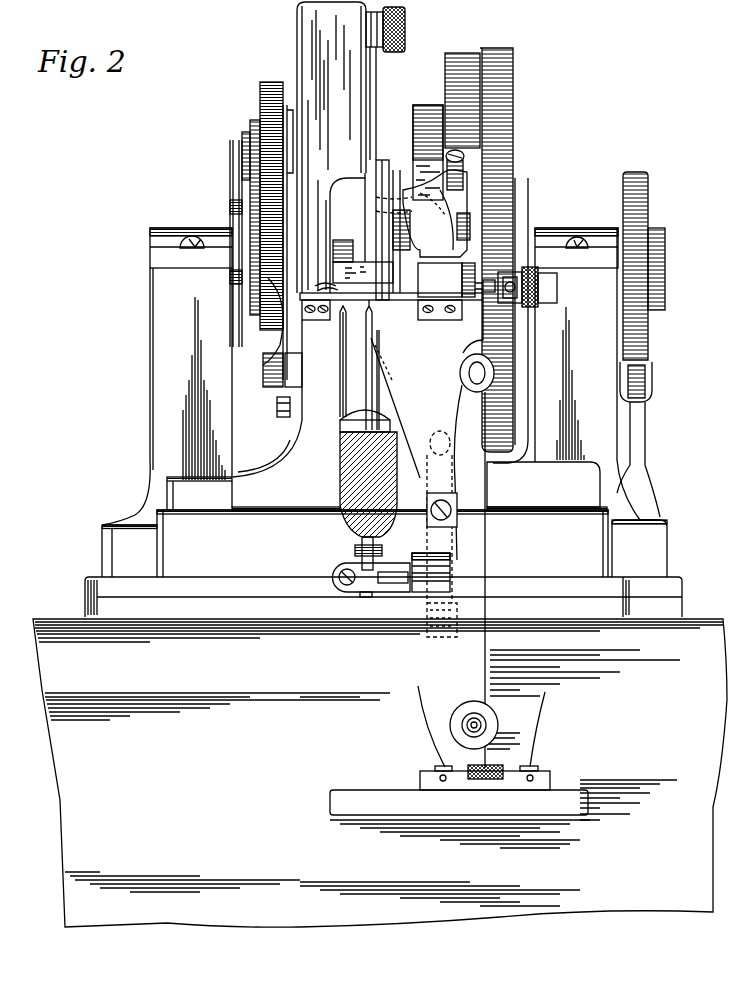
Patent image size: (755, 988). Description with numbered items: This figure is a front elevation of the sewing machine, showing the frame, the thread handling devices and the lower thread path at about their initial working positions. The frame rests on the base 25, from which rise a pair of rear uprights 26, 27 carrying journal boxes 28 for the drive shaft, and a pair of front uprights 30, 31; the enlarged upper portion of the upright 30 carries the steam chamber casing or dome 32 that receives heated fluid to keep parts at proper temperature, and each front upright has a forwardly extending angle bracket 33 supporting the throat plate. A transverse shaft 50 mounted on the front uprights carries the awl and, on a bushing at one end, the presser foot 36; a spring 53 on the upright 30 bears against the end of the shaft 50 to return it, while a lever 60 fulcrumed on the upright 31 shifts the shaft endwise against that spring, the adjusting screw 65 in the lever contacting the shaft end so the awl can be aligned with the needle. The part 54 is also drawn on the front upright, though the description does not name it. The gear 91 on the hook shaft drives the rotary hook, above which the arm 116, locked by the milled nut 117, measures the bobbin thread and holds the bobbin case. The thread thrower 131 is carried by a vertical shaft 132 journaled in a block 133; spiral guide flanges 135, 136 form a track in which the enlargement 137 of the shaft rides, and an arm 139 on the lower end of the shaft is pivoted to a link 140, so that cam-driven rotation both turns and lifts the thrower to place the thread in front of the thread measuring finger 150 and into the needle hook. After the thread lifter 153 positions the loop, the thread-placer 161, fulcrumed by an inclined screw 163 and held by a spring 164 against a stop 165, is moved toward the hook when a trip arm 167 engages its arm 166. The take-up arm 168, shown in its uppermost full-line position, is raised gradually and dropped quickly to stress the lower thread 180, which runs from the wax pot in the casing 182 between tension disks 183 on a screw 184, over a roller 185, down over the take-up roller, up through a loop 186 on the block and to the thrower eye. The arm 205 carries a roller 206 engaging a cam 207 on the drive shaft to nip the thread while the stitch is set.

The base 25 is at (86, 586).
The upright 26 is at (172, 368).
The upright 27 is at (645, 403).
The journal boxes 28 is at (150, 243).
The upright 30 is at (300, 440).
The upright 31 is at (495, 462).
The steam chamber casing or dome 32 is at (312, 42).
The angle bracket 33 is at (316, 314).
The presser foot 36 is at (388, 272).
The shaft 50 is at (476, 352).
The spring 53 is at (232, 272).
The housing 54 is at (318, 286).
The lever 60 is at (491, 280).
The adjusting screw 65 is at (490, 293).
The gear 91 is at (260, 98).
The arm 116 is at (378, 88).
The milled nut 117 is at (400, 29).
The thread thrower 131 is at (367, 348).
The shaft 132 is at (360, 558).
The block 133 is at (332, 488).
The guide flange 135 is at (395, 425).
The guide flange 136 is at (397, 423).
The enlargement 137 is at (348, 430).
The arm 139 is at (372, 588).
The link 140 is at (414, 600).
The thread measuring finger 150 is at (350, 377).
The thread lifter 153 is at (393, 178).
The thread-placer 161 is at (465, 222).
The screw 163 is at (468, 156).
The spring 164 is at (467, 170).
The stop 165 is at (472, 228).
The arm 166 is at (421, 140).
The trip arm 167 is at (420, 264).
The take-up arm 168 is at (462, 478).
The lower thread 180 is at (487, 605).
The boiler or furnace casing 182 is at (90, 788).
The tension disks 183 is at (496, 718).
The screw 184 is at (473, 712).
The roller 185 is at (482, 412).
The loop 186 is at (408, 445).
The arm 205 is at (640, 447).
The roller 206 is at (640, 375).
The cam 207 is at (649, 330).